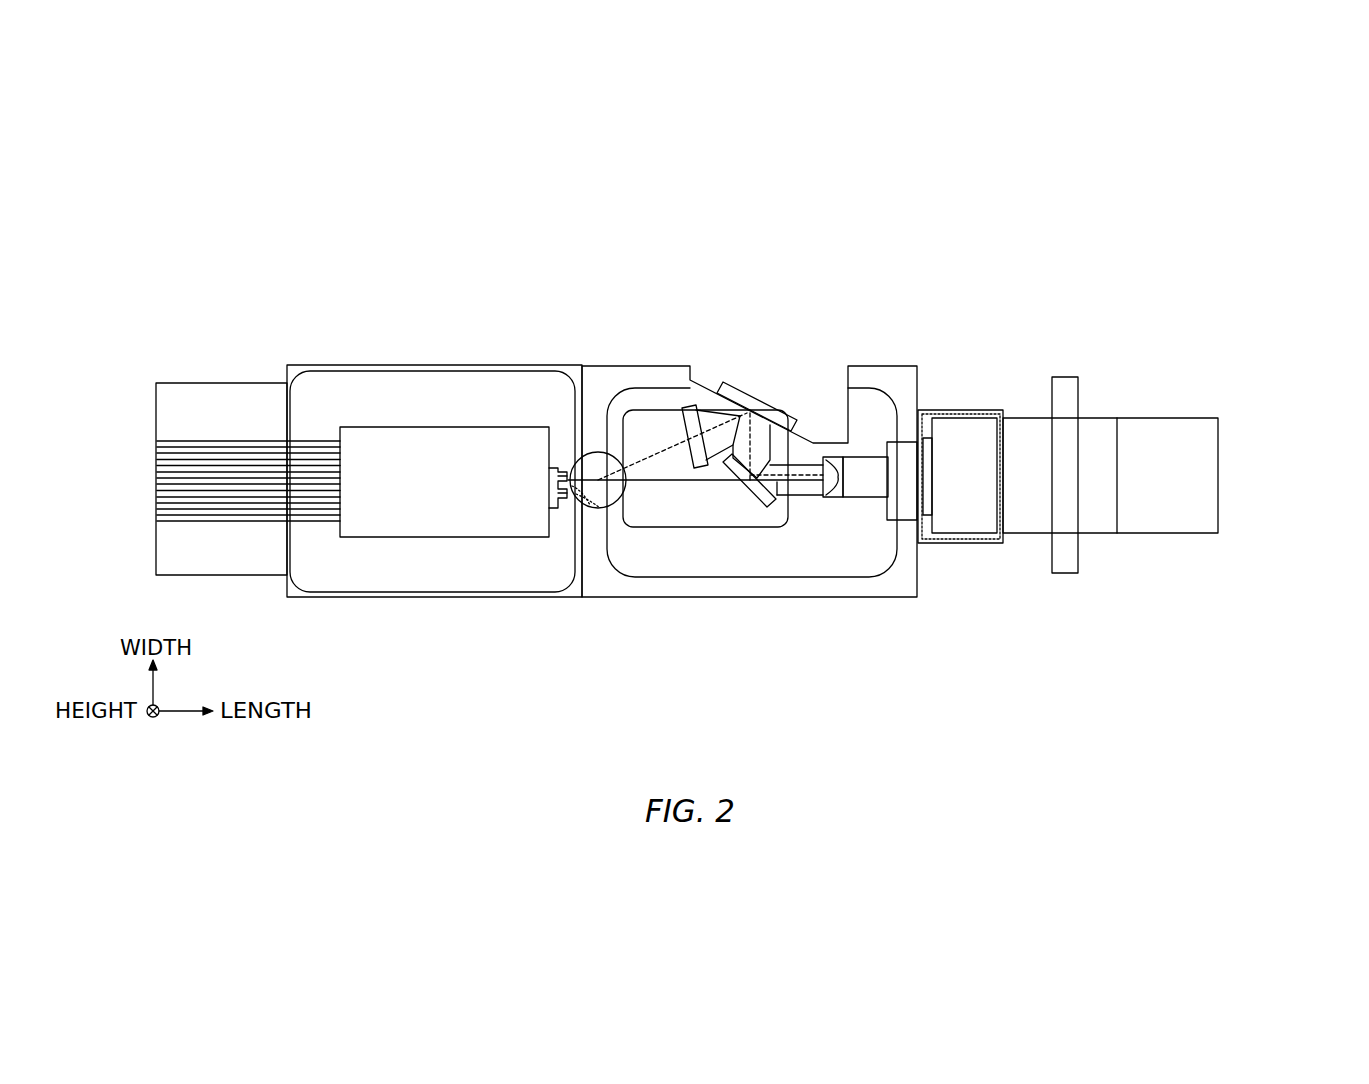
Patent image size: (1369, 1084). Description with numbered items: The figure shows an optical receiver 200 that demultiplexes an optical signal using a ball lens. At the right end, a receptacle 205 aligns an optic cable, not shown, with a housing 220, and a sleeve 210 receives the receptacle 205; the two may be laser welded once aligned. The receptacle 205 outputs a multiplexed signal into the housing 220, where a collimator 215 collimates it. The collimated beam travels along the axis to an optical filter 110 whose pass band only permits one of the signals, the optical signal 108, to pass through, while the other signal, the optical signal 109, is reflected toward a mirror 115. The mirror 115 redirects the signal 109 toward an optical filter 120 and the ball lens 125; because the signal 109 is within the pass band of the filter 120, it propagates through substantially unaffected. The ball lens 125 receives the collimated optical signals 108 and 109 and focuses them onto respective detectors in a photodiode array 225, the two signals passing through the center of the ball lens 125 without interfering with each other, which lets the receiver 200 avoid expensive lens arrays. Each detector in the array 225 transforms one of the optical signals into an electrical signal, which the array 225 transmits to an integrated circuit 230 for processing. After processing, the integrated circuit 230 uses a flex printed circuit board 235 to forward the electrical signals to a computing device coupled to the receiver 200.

The optical receiver 200 is at (877, 199).
The flex printed circuit board 235 is at (228, 393).
The photodiode array 225 is at (555, 468).
The integrated circuit 230 is at (459, 507).
The ball lens 125 is at (598, 508).
The optical signal 108 is at (706, 482).
The optical signal 109 is at (675, 447).
The optical filter 120 is at (690, 405).
The mirror 115 is at (735, 388).
The optical filter 110 is at (758, 508).
The collimator 215 is at (862, 487).
The sleeve 210 is at (963, 408).
The receptacle 205 is at (1140, 534).
The housing 220 is at (820, 592).